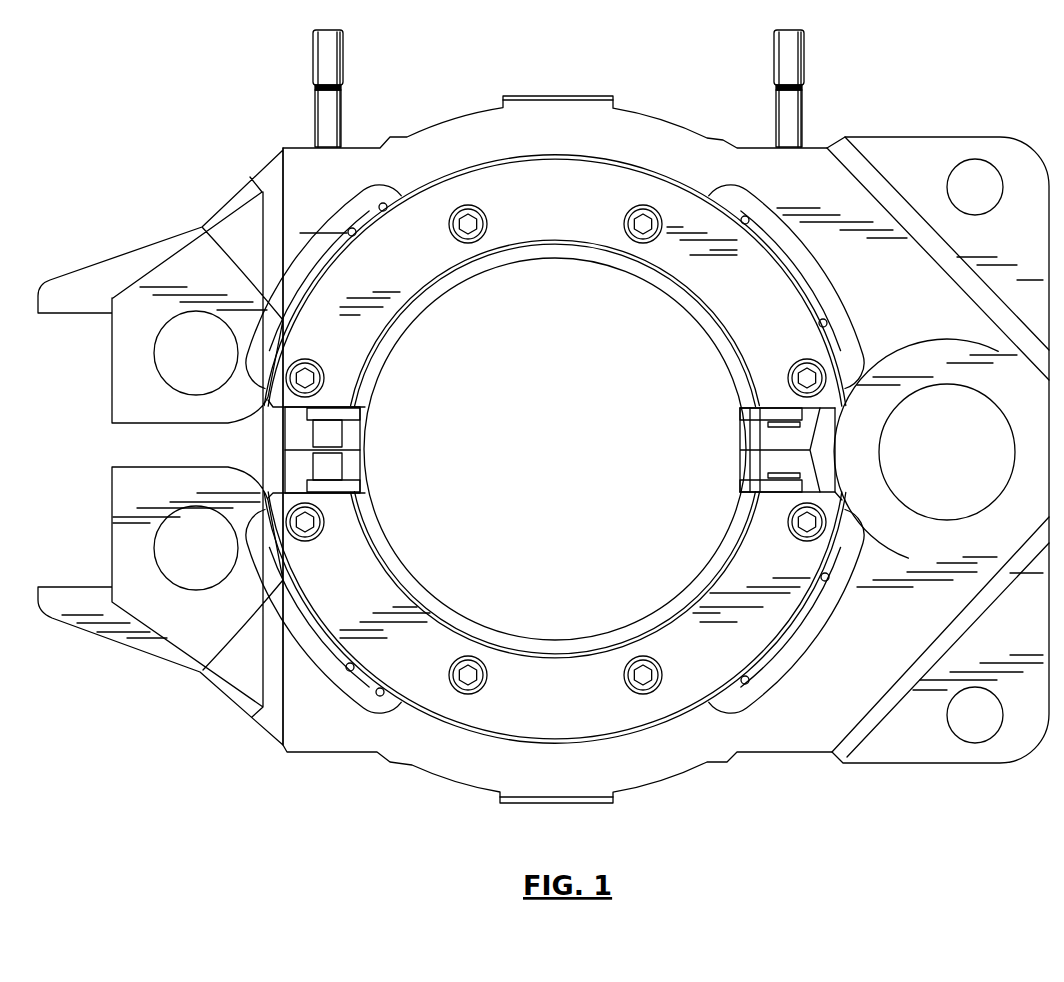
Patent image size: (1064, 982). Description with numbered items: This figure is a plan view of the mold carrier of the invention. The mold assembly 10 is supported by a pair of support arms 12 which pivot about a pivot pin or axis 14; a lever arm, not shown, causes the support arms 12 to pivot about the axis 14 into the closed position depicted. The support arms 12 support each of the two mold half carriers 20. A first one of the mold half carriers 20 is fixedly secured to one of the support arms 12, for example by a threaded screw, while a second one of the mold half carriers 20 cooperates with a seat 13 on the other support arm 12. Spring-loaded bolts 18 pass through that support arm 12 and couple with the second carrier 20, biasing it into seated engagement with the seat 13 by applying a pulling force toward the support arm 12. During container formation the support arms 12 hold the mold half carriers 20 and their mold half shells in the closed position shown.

The mold assembly 10 is at (634, 158).
The support arms 12 is at (205, 165).
The seat 13 is at (330, 194).
The pivot pin 14 is at (933, 497).
The spring-loaded bolts 18 is at (345, 58).
The mold half carriers 20 is at (413, 323).